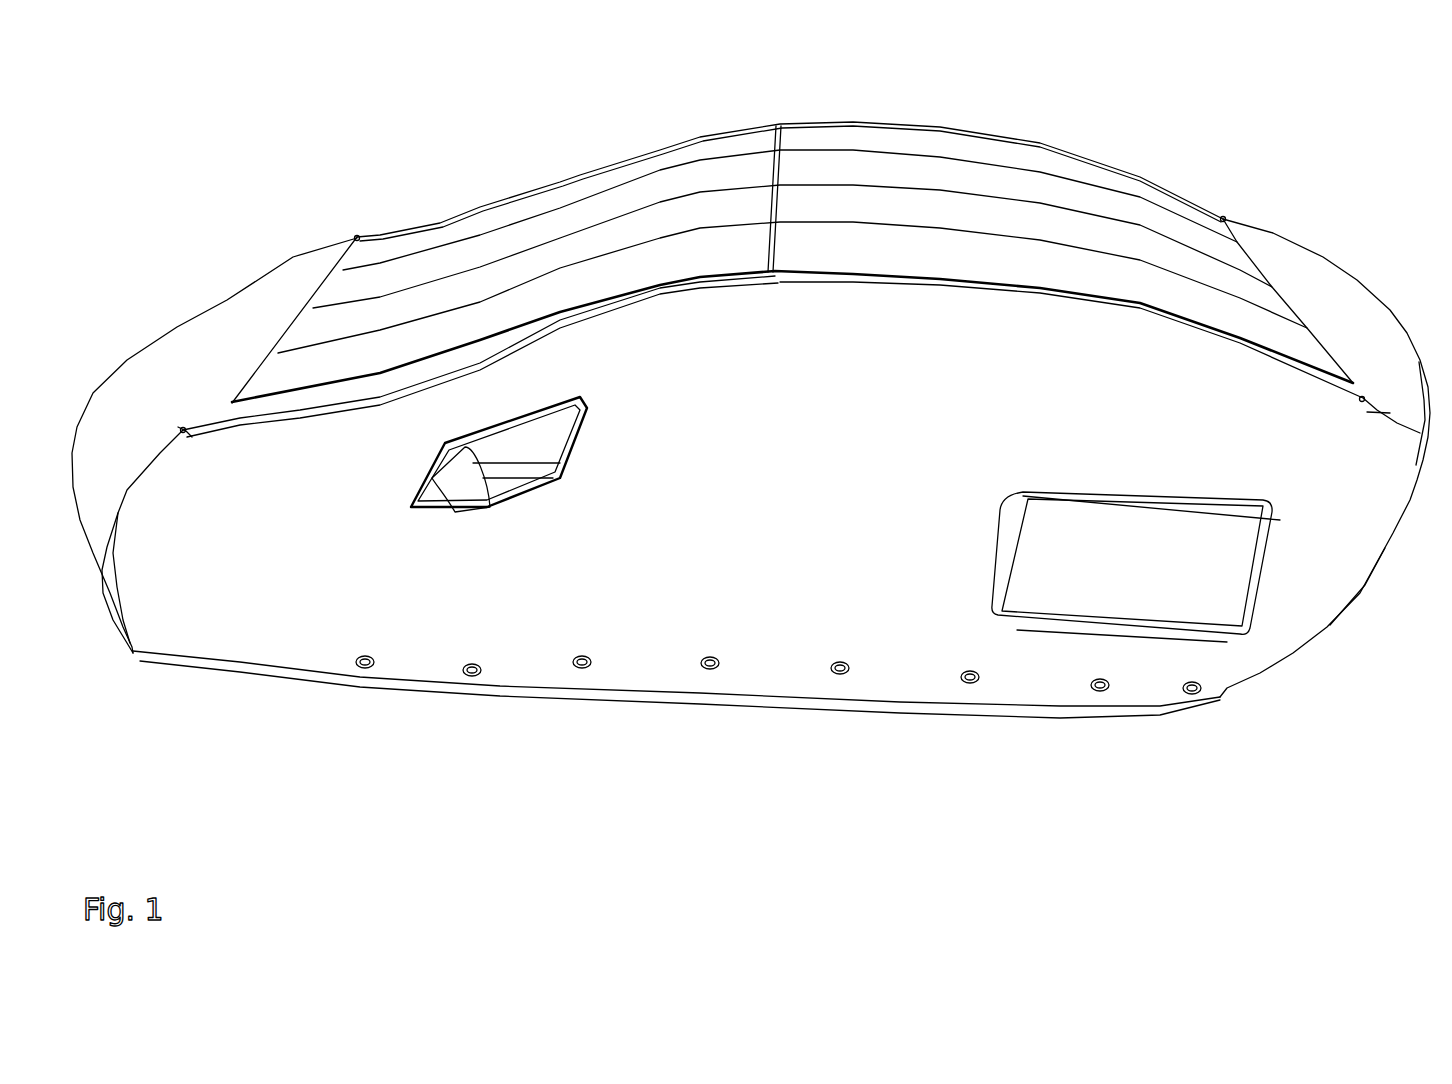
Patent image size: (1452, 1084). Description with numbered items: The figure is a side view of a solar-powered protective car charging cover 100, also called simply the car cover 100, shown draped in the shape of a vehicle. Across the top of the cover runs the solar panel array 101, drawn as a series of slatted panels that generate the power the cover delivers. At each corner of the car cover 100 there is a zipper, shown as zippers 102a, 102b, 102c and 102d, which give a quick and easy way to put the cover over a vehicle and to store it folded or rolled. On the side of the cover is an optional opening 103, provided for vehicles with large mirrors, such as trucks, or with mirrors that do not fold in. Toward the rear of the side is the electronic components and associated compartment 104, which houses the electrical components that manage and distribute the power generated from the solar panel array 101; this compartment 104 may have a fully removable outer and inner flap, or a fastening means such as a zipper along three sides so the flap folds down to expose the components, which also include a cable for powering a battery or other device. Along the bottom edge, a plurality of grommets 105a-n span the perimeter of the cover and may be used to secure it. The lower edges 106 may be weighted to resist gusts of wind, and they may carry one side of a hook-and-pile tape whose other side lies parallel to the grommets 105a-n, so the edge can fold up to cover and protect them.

The solar-powered protective car charging cover 100 is at (358, 768).
The solar panel array 101 is at (663, 153).
The zipper 102a is at (183, 433).
The zipper 102b is at (357, 236).
The zipper 102c is at (1223, 217).
The zipper 102d is at (1362, 401).
The optional openings 103 is at (538, 478).
The electronic components and associated compartment 104 is at (1127, 500).
The plurality of grommets 105a-n is at (842, 676).
The weighted edges 106 is at (543, 692).